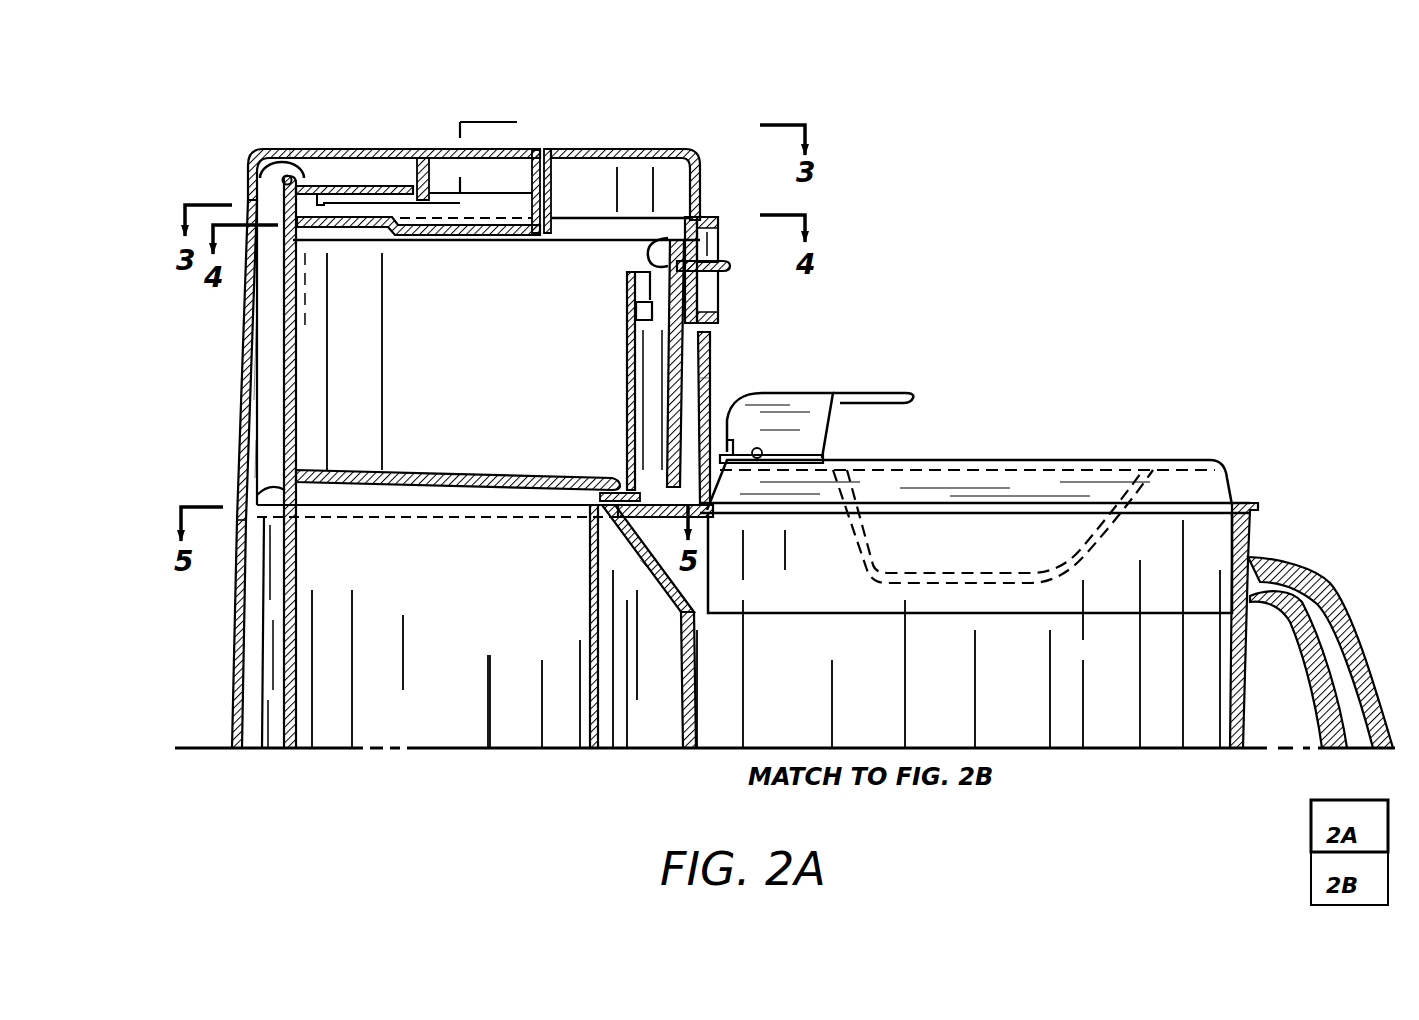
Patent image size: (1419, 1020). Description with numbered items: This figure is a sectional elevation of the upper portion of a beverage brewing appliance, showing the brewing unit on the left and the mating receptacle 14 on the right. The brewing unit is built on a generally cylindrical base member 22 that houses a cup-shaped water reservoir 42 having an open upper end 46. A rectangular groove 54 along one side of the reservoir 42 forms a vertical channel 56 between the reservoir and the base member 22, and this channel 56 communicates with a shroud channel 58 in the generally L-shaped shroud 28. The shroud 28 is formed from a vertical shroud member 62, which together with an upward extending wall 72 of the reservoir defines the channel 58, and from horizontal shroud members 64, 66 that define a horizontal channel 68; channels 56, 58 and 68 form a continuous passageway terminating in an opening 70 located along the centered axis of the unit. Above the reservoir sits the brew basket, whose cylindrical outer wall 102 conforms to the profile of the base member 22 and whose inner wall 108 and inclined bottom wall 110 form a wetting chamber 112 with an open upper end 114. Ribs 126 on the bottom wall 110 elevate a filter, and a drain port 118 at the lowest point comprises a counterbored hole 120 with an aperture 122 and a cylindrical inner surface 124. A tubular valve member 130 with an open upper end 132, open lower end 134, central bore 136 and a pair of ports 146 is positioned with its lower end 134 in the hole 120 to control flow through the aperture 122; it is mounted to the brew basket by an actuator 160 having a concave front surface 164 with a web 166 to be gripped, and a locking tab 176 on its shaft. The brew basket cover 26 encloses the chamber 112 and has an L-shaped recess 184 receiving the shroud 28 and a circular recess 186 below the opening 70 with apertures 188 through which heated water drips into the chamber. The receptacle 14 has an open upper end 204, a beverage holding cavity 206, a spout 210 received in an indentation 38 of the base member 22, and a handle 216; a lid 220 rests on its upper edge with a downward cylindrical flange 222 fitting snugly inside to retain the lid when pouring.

The receptacle 14 is at (1292, 538).
The base member 22 is at (240, 579).
The brew basket cover 26 is at (667, 147).
The shroud 28 is at (265, 146).
The indentation 38 is at (663, 588).
The water reservoir 42 is at (480, 681).
The open upper end 46 is at (372, 509).
The rectangular groove 54 is at (262, 672).
The channel 56 is at (240, 642).
The shroud channel 58 is at (263, 397).
The vertical shroud member 62 is at (247, 438).
The horizontal shroud member 64 is at (291, 148).
The horizontal shroud member 66 is at (256, 186).
The horizontal channel 68 is at (355, 184).
The opening 70 is at (485, 163).
The upward extending wall 72 is at (247, 476).
The outer wall 102 is at (705, 379).
The inner wall 108 is at (413, 310).
The bottom wall 110 is at (459, 471).
The wetting chamber 112 is at (472, 377).
The open upper end 114 is at (509, 246).
The drain port 118 is at (458, 469).
The counterbored hole 120 is at (617, 504).
The aperture 122 is at (630, 562).
The cylindrical inner surface 124 is at (626, 513).
The ribs 126 is at (509, 470).
The valve member 130 is at (616, 386).
The open upper end 132 is at (660, 254).
The open lower end 134 is at (650, 494).
The central bore 136 is at (705, 352).
The ports 146 is at (634, 312).
The actuator 160 is at (733, 317).
The front surface 164 is at (708, 250).
The web 166 is at (727, 266).
The locking tab 176 is at (684, 215).
The L-shaped recess 184 is at (318, 200).
The circular recess 186 is at (408, 222).
The apertures 188 is at (462, 231).
The open upper end 204 is at (1250, 541).
The beverage holding cavity 206 is at (1016, 694).
The spout 210 is at (683, 606).
The handle 216 is at (1345, 597).
The lid 220 is at (1084, 460).
The cylindrical flange 222 is at (1197, 550).